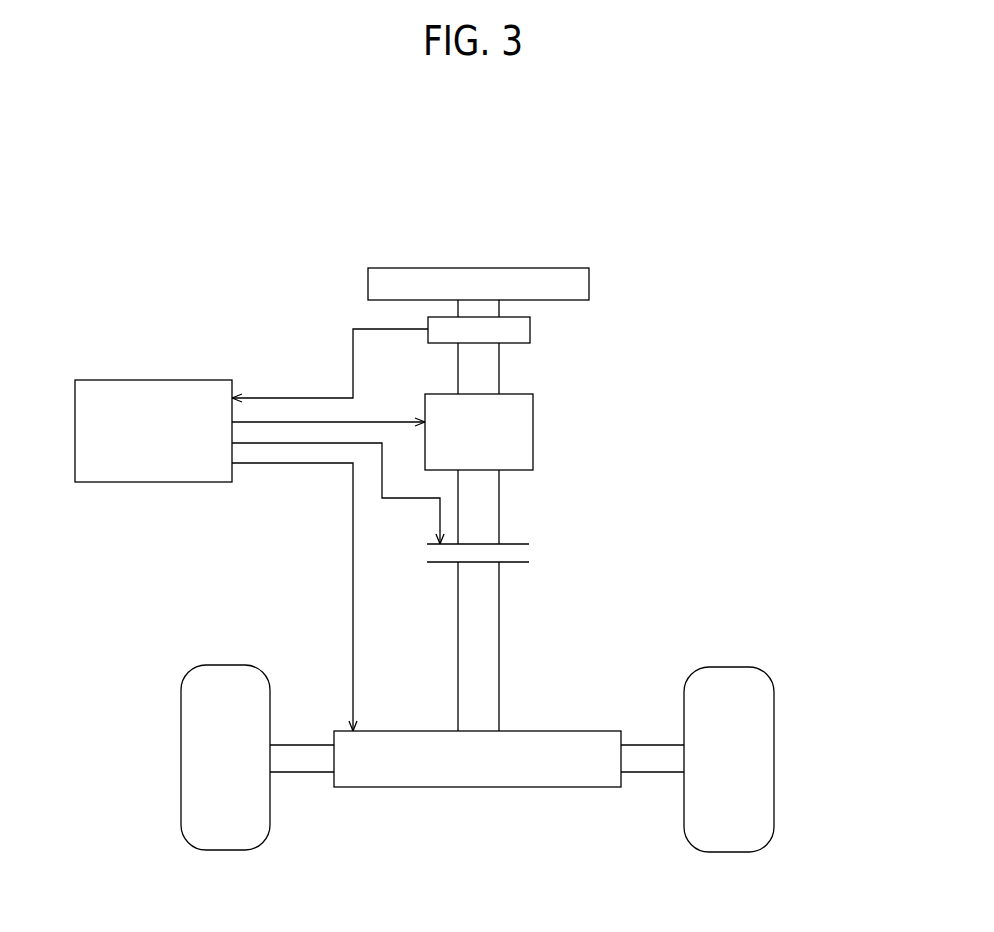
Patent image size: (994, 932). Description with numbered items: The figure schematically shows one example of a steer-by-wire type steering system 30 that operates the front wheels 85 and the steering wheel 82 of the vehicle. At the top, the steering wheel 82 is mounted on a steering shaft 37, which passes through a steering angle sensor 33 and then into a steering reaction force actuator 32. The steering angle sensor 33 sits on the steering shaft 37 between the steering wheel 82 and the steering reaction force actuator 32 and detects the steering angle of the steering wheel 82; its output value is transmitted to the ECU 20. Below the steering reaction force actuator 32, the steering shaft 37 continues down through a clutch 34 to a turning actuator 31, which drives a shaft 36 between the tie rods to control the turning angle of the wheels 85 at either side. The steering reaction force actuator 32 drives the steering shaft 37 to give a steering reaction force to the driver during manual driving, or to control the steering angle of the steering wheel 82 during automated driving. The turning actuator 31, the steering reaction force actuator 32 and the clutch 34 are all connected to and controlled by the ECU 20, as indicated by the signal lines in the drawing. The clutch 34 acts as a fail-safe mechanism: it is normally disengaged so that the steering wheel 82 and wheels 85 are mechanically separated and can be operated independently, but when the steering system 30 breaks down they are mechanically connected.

The ECU 20 is at (157, 380).
The steering system 30 is at (728, 310).
The turning actuator 31 is at (544, 788).
The steering reaction force actuator 32 is at (533, 430).
The steering angle sensor 33 is at (530, 328).
The clutch 34 is at (520, 544).
The shaft 36 is at (645, 745).
The steering shaft 37 is at (500, 497).
The steering wheel 82 is at (565, 268).
The wheels 85 is at (181, 742).